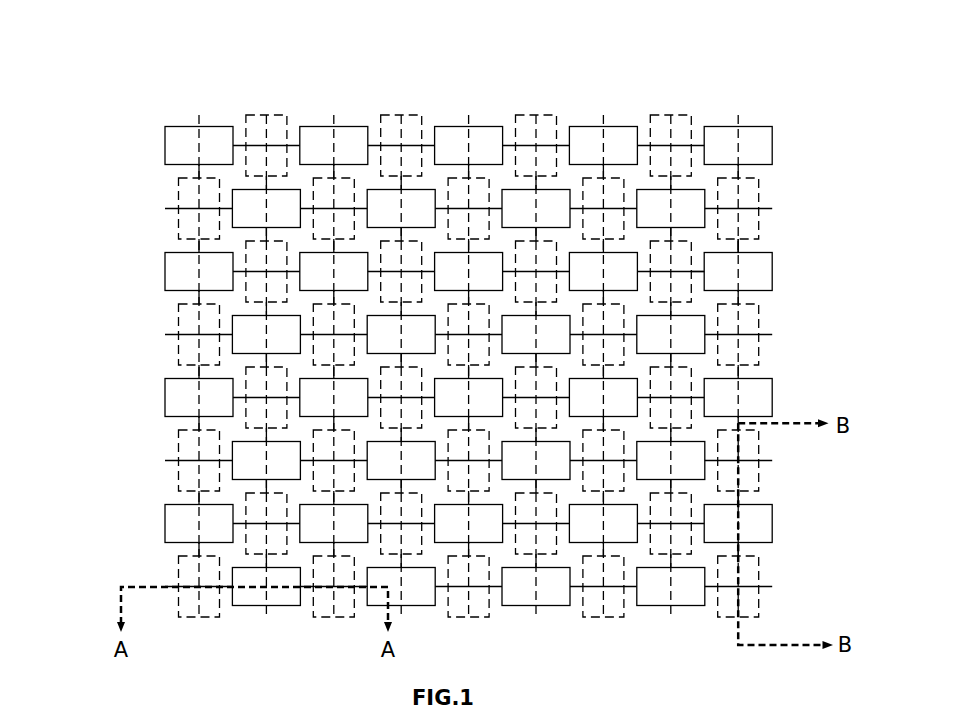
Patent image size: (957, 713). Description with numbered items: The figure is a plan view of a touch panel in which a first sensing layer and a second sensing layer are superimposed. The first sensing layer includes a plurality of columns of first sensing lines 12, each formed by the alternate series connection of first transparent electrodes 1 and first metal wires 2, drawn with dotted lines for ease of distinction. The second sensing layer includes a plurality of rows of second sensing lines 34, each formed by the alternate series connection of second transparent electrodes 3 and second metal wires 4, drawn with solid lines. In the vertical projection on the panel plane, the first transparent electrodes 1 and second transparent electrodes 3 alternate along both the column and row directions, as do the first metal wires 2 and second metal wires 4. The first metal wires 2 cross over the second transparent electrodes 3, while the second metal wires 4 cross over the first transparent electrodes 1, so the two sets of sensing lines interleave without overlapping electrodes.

The first transparent electrode 1 is at (751, 196).
The first metal wire 2 is at (737, 246).
The second transparent electrode 3 is at (750, 283).
The second metal wire 4 is at (695, 270).
The first sensing line 12 is at (672, 110).
The second sensing line 34 is at (157, 146).